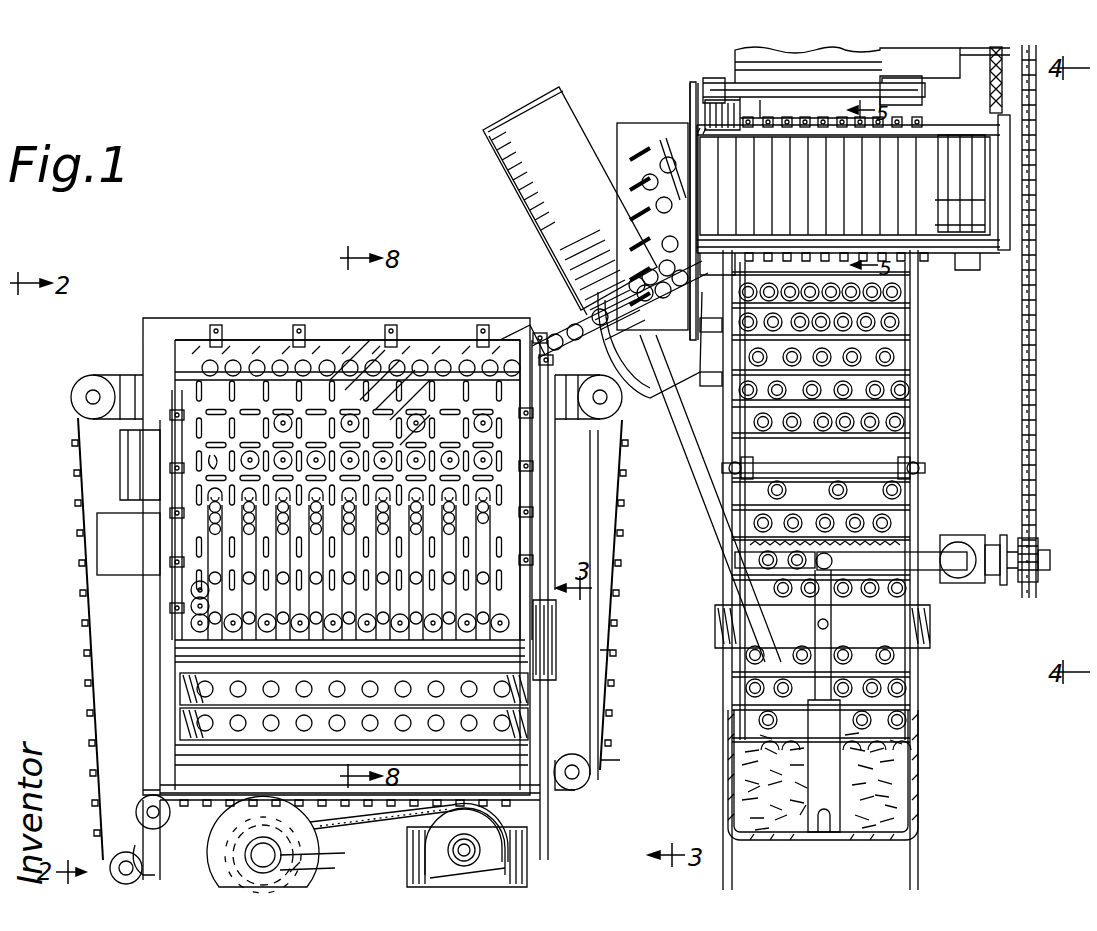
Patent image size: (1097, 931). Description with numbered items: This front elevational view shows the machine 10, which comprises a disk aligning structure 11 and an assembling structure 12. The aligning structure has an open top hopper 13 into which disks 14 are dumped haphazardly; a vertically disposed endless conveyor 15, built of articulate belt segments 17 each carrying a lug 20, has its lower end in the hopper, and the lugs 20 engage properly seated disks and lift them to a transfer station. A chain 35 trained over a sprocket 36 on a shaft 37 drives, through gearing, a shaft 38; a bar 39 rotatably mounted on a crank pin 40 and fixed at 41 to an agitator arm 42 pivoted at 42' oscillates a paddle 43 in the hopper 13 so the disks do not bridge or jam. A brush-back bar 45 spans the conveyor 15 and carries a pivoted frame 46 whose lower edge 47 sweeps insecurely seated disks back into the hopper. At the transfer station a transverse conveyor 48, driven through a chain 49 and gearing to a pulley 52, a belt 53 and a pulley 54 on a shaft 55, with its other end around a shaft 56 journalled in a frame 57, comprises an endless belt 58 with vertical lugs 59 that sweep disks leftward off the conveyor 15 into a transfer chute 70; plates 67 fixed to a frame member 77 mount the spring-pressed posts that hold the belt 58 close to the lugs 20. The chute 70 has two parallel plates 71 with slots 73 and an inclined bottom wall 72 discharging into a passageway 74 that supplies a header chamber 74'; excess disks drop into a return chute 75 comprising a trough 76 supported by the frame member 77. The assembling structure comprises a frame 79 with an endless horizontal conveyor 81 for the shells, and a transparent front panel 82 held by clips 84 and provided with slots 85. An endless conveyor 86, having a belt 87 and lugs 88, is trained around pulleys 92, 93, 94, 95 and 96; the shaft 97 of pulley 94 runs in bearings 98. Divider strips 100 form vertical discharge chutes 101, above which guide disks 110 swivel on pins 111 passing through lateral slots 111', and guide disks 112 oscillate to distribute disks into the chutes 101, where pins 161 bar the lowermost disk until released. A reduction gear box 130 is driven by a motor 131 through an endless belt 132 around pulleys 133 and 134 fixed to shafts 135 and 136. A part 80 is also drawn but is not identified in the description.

The tower frame 10 is at (898, 415).
The disk aligning structure 11 is at (1040, 290).
The assembling structure 12 is at (173, 316).
The open top hopper 13 is at (920, 785).
The disks 14 is at (195, 625).
The vertically disposed endless conveyor 15 is at (910, 347).
The articulate belt segments 17 is at (900, 372).
The lug 20 is at (905, 295).
The chain 35 is at (1040, 398).
The sprocket 36 is at (1030, 538).
The shaft 37 is at (1038, 560).
The shaft 38 is at (975, 533).
The bar 39 is at (884, 575).
The crank pin 40 is at (935, 615).
The fixed connection 41 is at (818, 555).
The agitator arm 42 is at (896, 701).
The pivot 42' is at (904, 637).
The paddle 43 is at (795, 790).
The bar 45 is at (935, 468).
The pivoted frame 46 is at (900, 520).
The lower edge 47 is at (745, 560).
The transverse conveyor 48 is at (985, 190).
The chain 49 is at (1002, 92).
The pulley 52 is at (925, 97).
The belt 53 is at (833, 82).
The pulley 54 is at (720, 85).
The shaft 55 is at (724, 352).
The shaft 56 is at (968, 240).
The frame 57 is at (1012, 143).
The endless belt 58 is at (968, 163).
The lugs 59 is at (940, 215).
The plate 67 is at (907, 130).
The transfer chute 70 is at (618, 223).
The parallel plates 71 is at (626, 140).
The bottom wall 72 is at (648, 320).
The slots 73 is at (663, 140).
The passageway 74 is at (609, 312).
The header chamber 74' is at (371, 364).
The return chute 75 is at (518, 200).
The trough 76 is at (535, 235).
The frame member 77 is at (715, 345).
The frame 79 is at (242, 314).
The top rail 80 is at (286, 318).
The endless horizontal conveyor 81 is at (548, 680).
The panel 82 is at (460, 318).
The clips 84 is at (210, 346).
The slots 85 is at (262, 380).
The endless conveyor 86 is at (612, 552).
The belt 87 is at (76, 430).
The lugs 88 is at (605, 635).
The pulley 92 is at (95, 375).
The pulley 93 is at (593, 420).
The pulley 94 is at (145, 810).
The pulley 95 is at (172, 813).
The pulley 96 is at (582, 786).
The shaft 97 is at (145, 870).
The bearings 98 is at (150, 855).
The divider strips 100 is at (215, 553).
The vertical discharge chutes 101 is at (197, 530).
The guide disks 110 is at (274, 424).
The pin 111 is at (348, 443).
The lateral slots 111' is at (148, 462).
The guide disk 112 is at (160, 505).
The reduction gear box 130 is at (232, 735).
The motor 131 is at (270, 735).
The endless belt 132 is at (348, 818).
The pulley 133 is at (318, 880).
The pulley 134 is at (488, 832).
The shaft 135 is at (312, 862).
The shaft 136 is at (510, 850).
The pin 161 is at (192, 648).